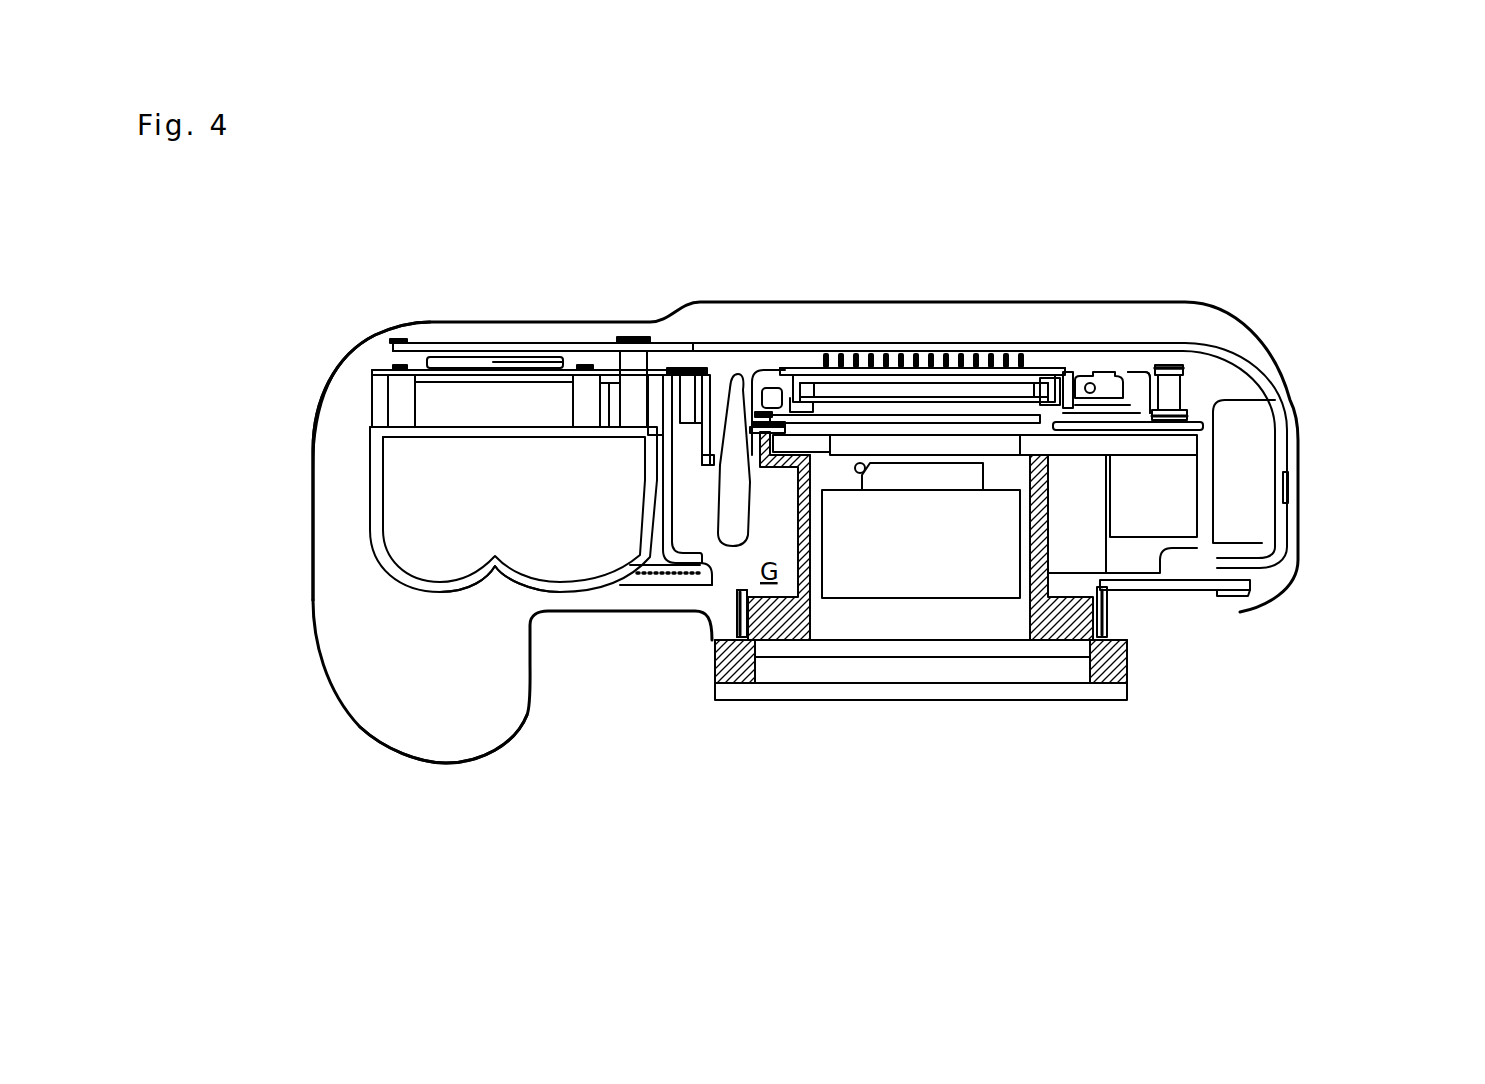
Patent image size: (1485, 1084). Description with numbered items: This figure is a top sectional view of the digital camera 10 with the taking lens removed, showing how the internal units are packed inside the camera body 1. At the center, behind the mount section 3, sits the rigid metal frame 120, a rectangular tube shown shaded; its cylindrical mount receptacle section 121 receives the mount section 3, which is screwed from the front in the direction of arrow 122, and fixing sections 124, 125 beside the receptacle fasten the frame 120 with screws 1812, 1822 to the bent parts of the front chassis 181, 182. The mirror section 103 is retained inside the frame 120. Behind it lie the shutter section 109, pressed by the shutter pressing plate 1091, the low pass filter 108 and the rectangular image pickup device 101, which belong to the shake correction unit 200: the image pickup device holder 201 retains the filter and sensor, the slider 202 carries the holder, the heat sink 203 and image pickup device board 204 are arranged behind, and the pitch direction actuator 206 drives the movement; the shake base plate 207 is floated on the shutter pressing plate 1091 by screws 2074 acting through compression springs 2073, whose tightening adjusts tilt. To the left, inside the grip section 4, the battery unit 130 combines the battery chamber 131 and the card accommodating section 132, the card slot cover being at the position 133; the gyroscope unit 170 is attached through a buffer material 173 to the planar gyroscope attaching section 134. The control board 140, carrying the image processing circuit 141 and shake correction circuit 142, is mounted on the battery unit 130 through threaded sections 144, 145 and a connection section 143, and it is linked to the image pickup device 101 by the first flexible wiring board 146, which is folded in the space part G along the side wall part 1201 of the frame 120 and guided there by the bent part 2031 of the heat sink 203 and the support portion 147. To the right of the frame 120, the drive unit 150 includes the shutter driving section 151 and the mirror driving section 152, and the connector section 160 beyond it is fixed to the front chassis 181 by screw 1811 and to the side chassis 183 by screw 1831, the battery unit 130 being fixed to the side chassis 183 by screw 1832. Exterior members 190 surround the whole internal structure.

The camera body 1 is at (1312, 410).
The mount section 3 is at (943, 693).
The grip section 4 is at (400, 735).
The digital camera 10 is at (1305, 360).
The image pickup device 101 is at (935, 397).
The mirror section 103 is at (950, 588).
The low pass filter 108 is at (905, 415).
The shutter section 109 is at (1003, 447).
The shutter pressing plate 1091 is at (752, 420).
The frame 120 is at (767, 610).
The side wall part 1201 is at (800, 497).
The mount receptacle section 121 is at (738, 667).
The arrow 122 is at (1108, 715).
The fixing section 124 is at (763, 613).
The fixing section 125 is at (1078, 613).
The battery unit 130 is at (225, 488).
The battery chamber 131 is at (383, 553).
The card accommodating section 132 is at (423, 400).
The card slot cover 133 is at (318, 395).
The gyroscope attaching section 134 is at (518, 580).
The control board 140 is at (548, 370).
The image processing circuit 141 is at (457, 343).
The shake correction circuit 142 is at (490, 357).
The connection section 143 is at (583, 412).
The threaded section 144 is at (405, 422).
The threaded section 145 is at (575, 440).
The first flexible wiring board 146 is at (708, 518).
The support portion 147 is at (690, 412).
The drive unit 150 is at (1395, 505).
The shutter driving section 151 is at (1177, 517).
The mirror driving section 152 is at (1077, 538).
The connector section 160 is at (1262, 457).
The gyroscope unit 170 is at (658, 594).
The buffer material 173 is at (700, 583).
The front chassis 181 is at (1165, 592).
The screw 1811 is at (1240, 606).
The screw 1812 is at (1110, 618).
The front chassis 182 is at (738, 615).
The screw 1822 is at (737, 603).
The side chassis 183 is at (1000, 345).
The screw 1831 is at (1290, 498).
The screw 1832 is at (632, 338).
The exterior members 190 is at (337, 672).
The shake correction unit 200 is at (1066, 374).
The image pickup device holder 201 is at (830, 383).
The slider 202 is at (806, 383).
The heat sink 203 is at (862, 368).
The bent part 2031 is at (748, 392).
The image pickup device board 204 is at (975, 365).
The pitch direction actuator 206 is at (1118, 374).
The shake base plate 207 is at (770, 388).
The compression spring 2073 is at (1240, 348).
The screw 2074 is at (1190, 370).